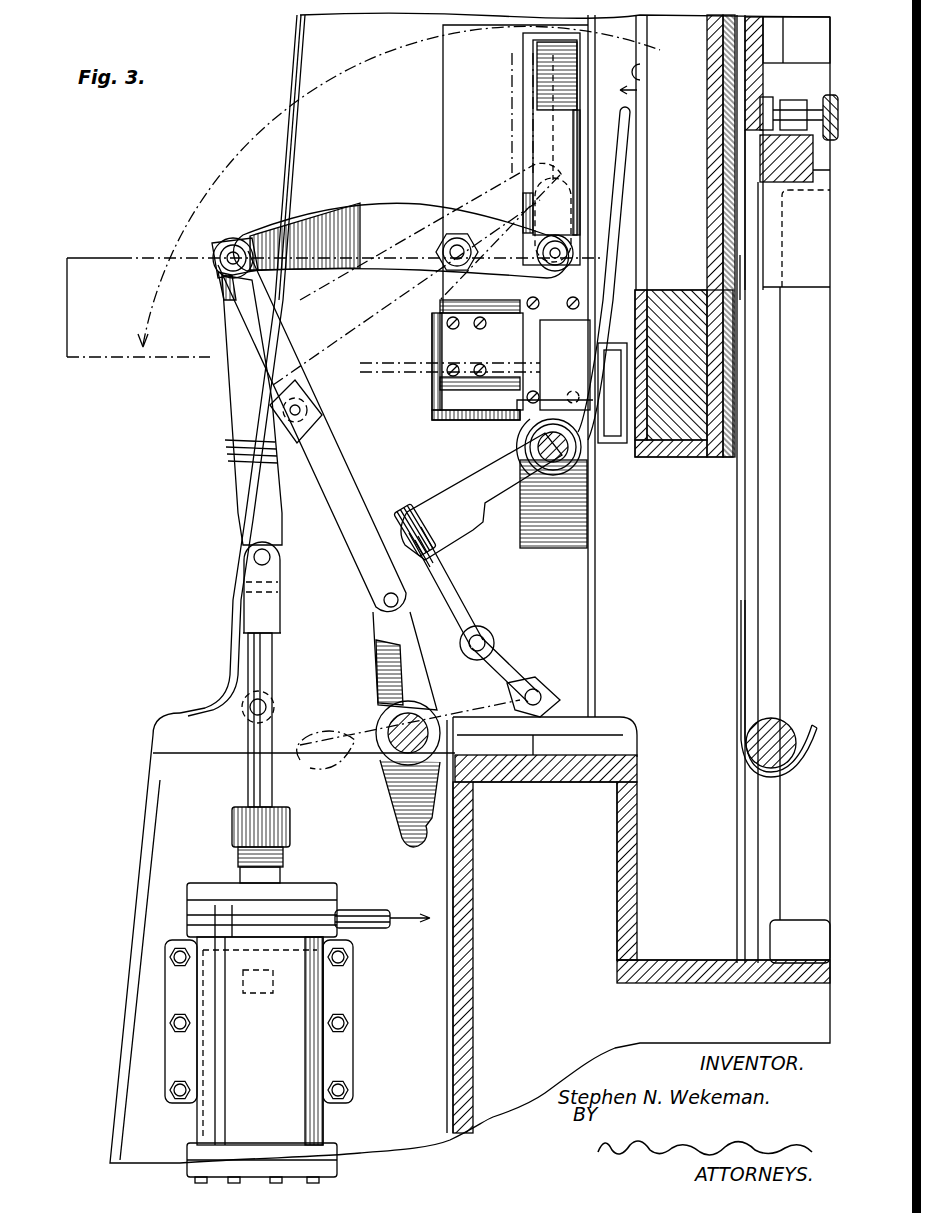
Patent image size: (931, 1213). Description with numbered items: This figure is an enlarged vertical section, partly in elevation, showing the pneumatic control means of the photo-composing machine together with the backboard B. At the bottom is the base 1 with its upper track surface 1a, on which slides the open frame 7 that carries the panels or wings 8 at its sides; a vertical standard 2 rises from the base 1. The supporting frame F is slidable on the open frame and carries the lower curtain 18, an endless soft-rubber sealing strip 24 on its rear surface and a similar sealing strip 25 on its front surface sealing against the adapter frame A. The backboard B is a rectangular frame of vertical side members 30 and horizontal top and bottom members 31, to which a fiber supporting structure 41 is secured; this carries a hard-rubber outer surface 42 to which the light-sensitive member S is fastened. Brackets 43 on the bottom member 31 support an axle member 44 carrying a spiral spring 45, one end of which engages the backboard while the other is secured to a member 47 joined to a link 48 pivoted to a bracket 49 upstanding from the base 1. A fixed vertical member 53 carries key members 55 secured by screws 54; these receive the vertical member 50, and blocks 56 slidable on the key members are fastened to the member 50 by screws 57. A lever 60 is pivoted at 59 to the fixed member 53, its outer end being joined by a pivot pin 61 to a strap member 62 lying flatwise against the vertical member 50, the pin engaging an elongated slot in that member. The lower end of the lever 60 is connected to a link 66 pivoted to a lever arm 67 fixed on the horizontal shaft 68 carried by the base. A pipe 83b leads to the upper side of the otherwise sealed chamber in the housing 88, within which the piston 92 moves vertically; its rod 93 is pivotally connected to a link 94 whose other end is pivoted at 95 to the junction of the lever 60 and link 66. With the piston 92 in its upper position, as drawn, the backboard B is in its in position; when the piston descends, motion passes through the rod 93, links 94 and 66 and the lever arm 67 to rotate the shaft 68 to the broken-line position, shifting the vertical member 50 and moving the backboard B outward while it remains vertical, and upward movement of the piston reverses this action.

The base 1 is at (125, 985).
The upper track surface 1a is at (797, 916).
The vertical standard 2 is at (310, 42).
The open frame section 7 is at (768, 792).
The panel or wing 8 is at (745, 810).
The lower curtain 18 is at (737, 512).
The endless sealing strip 24 is at (738, 128).
The sealing strip 25 is at (752, 83).
The vertical side member 30 is at (642, 72).
The horizontal top and bottom member 31 is at (693, 462).
The supporting structure 41 is at (712, 165).
The outer surface 42 is at (727, 115).
The bracket 43 is at (605, 370).
The axle member 44 is at (590, 463).
The spiral spring 45 is at (592, 490).
The member 47 is at (478, 532).
The link 48 is at (470, 596).
The bracket 49 is at (497, 645).
The vertical member 50 is at (523, 78).
The fixed vertical member 53 is at (445, 80).
The screw 54 is at (445, 318).
The key member 55 is at (450, 335).
The block 56 is at (490, 402).
The screw 57 is at (545, 270).
The pivot 59 is at (443, 254).
The lever 60 is at (385, 205).
The pivot pin 61 is at (553, 248).
The strap member 62 is at (512, 138).
The link 66 is at (330, 444).
The lever arm 67 is at (375, 650).
The horizontal shaft 68 is at (372, 785).
The pipe 83b is at (365, 912).
The housing 88 is at (330, 1000).
The piston 92 is at (235, 930).
The rod 93 is at (258, 766).
The link 94 is at (232, 436).
The pivot 95 is at (235, 240).
The adapter frame A is at (770, 42).
The backboard B is at (656, 152).
The supporting frame F is at (765, 216).
The light-sensitive member S is at (740, 282).